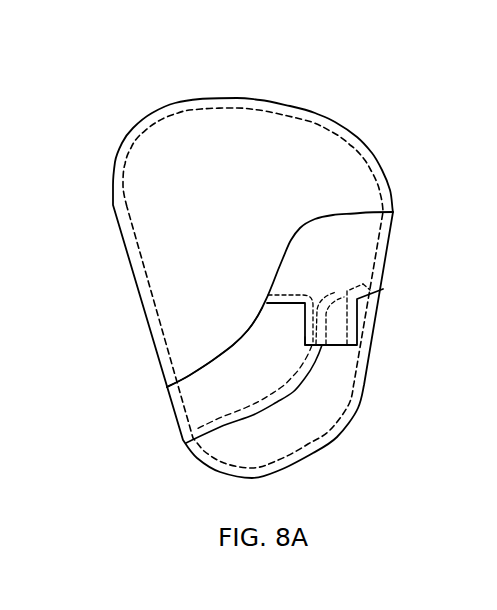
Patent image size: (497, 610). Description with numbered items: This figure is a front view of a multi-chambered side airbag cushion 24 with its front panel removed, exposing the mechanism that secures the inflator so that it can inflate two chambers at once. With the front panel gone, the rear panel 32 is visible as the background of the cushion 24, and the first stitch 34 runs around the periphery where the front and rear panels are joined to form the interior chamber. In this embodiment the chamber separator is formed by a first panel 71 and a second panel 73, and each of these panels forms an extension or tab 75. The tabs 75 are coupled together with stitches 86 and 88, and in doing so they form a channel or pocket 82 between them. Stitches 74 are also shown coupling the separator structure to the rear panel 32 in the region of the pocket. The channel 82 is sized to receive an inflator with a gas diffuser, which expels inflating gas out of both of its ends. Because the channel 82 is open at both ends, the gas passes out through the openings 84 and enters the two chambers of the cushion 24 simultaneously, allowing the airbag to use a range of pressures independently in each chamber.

The side airbag cushion 24 is at (160, 80).
The rear panel 32 is at (237, 130).
The first stitch 34 is at (330, 127).
The openings 84 is at (332, 211).
The first panel 71 is at (297, 253).
The second panel 73 is at (254, 327).
The channel or pocket 82 is at (346, 324).
The stitch 86 is at (292, 296).
The stitch 88 is at (363, 284).
The tabs 75 is at (308, 339).
The stitches 74 is at (273, 403).